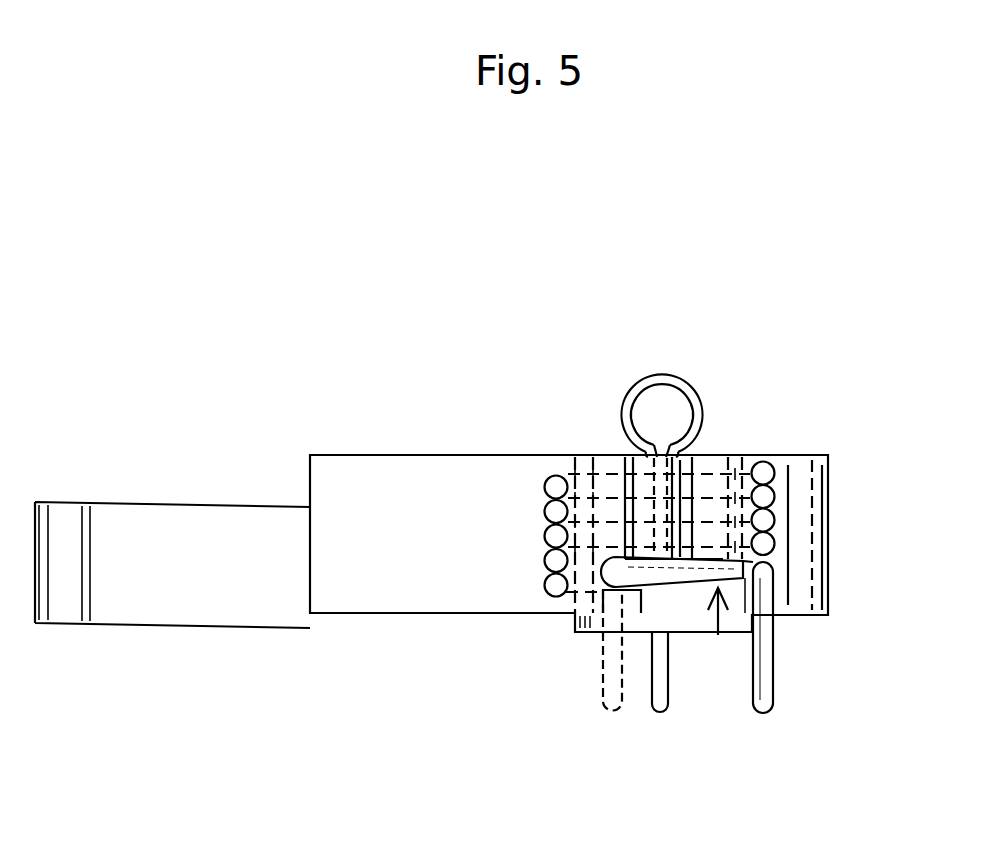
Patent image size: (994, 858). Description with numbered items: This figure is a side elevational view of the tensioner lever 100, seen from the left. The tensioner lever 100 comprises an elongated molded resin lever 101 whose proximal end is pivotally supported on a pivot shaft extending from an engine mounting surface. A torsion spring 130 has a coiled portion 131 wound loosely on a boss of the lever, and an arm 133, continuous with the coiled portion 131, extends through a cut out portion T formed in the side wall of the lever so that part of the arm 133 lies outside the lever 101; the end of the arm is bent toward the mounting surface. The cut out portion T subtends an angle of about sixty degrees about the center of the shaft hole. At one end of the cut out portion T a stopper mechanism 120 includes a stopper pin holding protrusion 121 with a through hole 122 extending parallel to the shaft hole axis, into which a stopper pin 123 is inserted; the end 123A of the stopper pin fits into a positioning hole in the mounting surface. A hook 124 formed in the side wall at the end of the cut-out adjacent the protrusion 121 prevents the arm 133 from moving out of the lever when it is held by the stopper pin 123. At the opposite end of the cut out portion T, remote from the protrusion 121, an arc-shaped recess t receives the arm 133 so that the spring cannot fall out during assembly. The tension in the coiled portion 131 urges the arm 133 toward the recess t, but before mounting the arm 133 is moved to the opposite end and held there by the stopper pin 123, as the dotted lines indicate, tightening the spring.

The tensioner lever 100 is at (405, 350).
The lever 101 is at (312, 432).
The stopper mechanism 120 is at (775, 297).
The stopper pin holding protrusion 121 is at (690, 478).
The through hole 122 is at (627, 453).
The stopper pin 123 is at (654, 374).
The end of the stopper pin 123A is at (660, 695).
The hook 124 is at (640, 600).
The torsion spring 130 is at (537, 530).
The coiled portion 131 is at (600, 578).
The arm 133 is at (603, 698).
The cut out portion T is at (717, 640).
The arc-shaped recess t is at (745, 562).